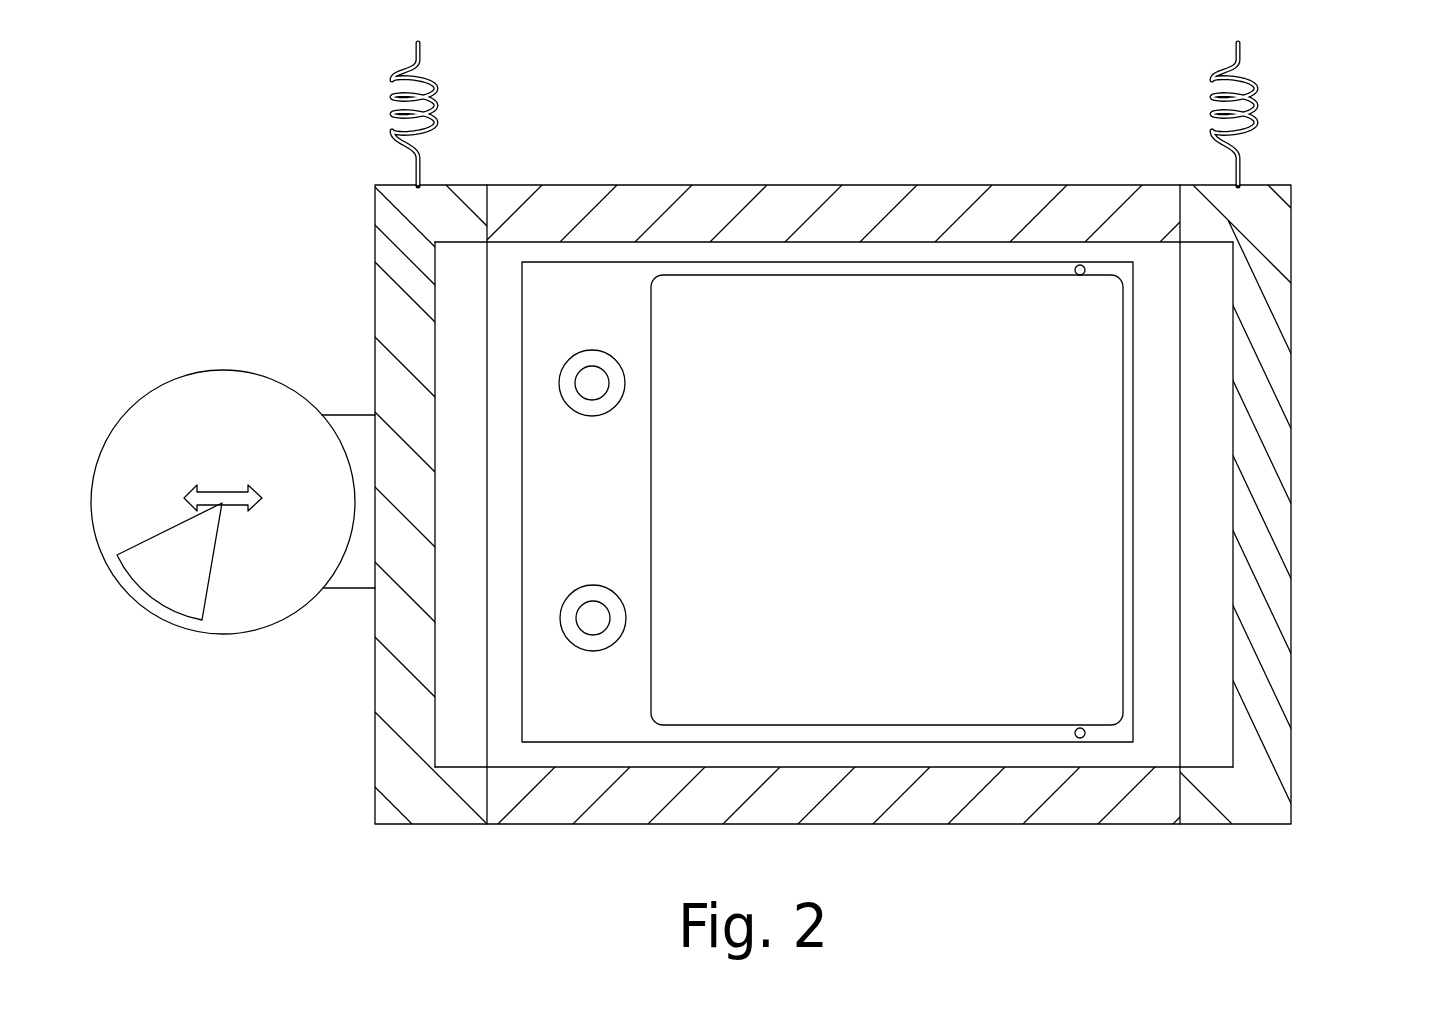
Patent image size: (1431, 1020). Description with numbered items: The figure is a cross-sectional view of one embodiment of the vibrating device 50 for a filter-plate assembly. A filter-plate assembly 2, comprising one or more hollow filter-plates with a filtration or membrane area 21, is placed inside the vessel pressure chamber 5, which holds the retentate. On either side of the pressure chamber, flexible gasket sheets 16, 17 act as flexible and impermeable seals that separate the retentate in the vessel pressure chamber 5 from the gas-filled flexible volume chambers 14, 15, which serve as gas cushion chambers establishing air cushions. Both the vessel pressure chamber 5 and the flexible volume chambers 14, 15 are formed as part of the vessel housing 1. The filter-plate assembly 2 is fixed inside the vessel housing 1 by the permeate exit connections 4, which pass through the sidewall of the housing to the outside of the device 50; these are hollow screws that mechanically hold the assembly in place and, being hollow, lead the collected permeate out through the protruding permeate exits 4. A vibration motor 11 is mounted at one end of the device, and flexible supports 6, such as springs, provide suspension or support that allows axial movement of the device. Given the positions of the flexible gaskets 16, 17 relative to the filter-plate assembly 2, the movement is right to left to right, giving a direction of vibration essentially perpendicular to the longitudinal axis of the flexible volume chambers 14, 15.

The vessel housing 1 is at (1291, 370).
The filter-plate assembly 2 is at (567, 295).
The permeate exits 4 is at (563, 410).
The vessel pressure chamber 5 is at (1170, 258).
The flexible supports 6 is at (436, 108).
The vibration motor 11 is at (213, 417).
The flexible volume chamber 14 is at (452, 298).
The flexible volume chamber 15 is at (1218, 477).
The flexible gasket sheet 16 is at (1182, 560).
The flexible gasket sheet 17 is at (487, 357).
The membrane area 21 is at (787, 303).
The vibrating device 50 is at (923, 168).